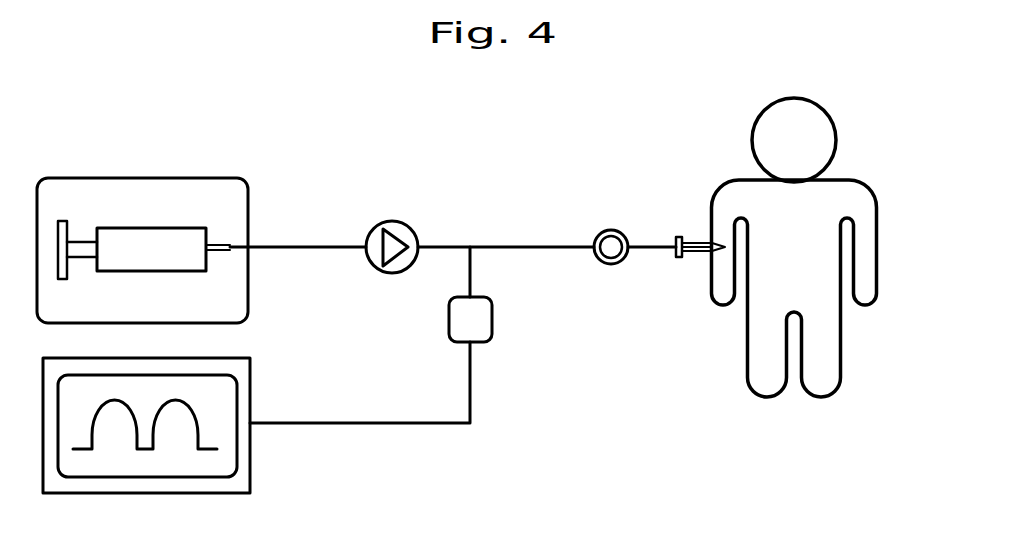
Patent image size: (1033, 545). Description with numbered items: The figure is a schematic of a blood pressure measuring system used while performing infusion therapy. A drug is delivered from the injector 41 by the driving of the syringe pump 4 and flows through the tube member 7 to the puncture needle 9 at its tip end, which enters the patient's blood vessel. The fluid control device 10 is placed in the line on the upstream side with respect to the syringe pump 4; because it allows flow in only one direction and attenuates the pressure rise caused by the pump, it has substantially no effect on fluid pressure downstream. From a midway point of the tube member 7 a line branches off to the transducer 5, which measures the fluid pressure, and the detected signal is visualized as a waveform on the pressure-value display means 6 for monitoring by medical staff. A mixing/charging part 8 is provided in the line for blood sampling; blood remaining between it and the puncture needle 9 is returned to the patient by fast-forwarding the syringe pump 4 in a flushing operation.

The syringe pump 4 is at (248, 295).
The injector 41 is at (127, 227).
The fluid control device 10 is at (372, 225).
The tube member 7 is at (507, 243).
The transducer 5 is at (490, 340).
The pressure-value display means 6 is at (250, 483).
The mixing/charging part 8 is at (605, 230).
The puncture needle 9 is at (700, 242).